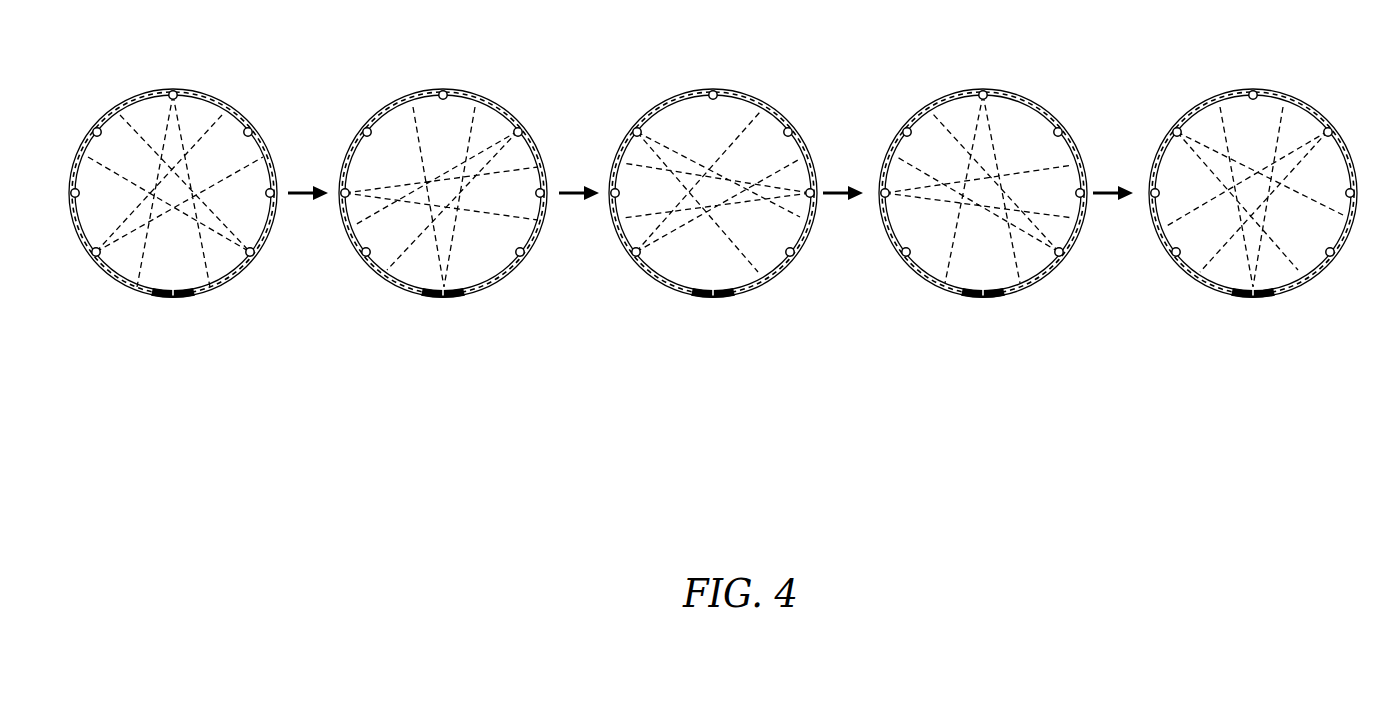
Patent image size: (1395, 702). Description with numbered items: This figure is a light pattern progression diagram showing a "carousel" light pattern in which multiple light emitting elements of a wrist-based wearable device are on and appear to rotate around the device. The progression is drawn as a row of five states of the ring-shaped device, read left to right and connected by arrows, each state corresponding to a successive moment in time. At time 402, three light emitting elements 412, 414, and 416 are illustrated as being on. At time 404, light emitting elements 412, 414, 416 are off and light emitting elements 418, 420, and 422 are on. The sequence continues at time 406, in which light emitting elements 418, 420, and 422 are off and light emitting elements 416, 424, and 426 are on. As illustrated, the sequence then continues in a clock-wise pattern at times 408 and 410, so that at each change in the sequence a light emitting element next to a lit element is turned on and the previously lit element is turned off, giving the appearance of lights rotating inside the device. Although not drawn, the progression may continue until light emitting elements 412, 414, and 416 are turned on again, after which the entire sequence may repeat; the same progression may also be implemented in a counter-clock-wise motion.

The time 402 is at (230, 89).
The time 404 is at (502, 89).
The time 406 is at (774, 89).
The time 408 is at (1042, 89).
The time 410 is at (1314, 89).
The light emitting element 412 is at (175, 91).
The light emitting element 414 is at (253, 258).
The light emitting element 416 is at (95, 258).
The light emitting element 418 is at (521, 129).
The light emitting element 420 is at (446, 298).
The light emitting element 422 is at (341, 193).
The light emitting element 424 is at (634, 131).
The light emitting element 426 is at (826, 193).